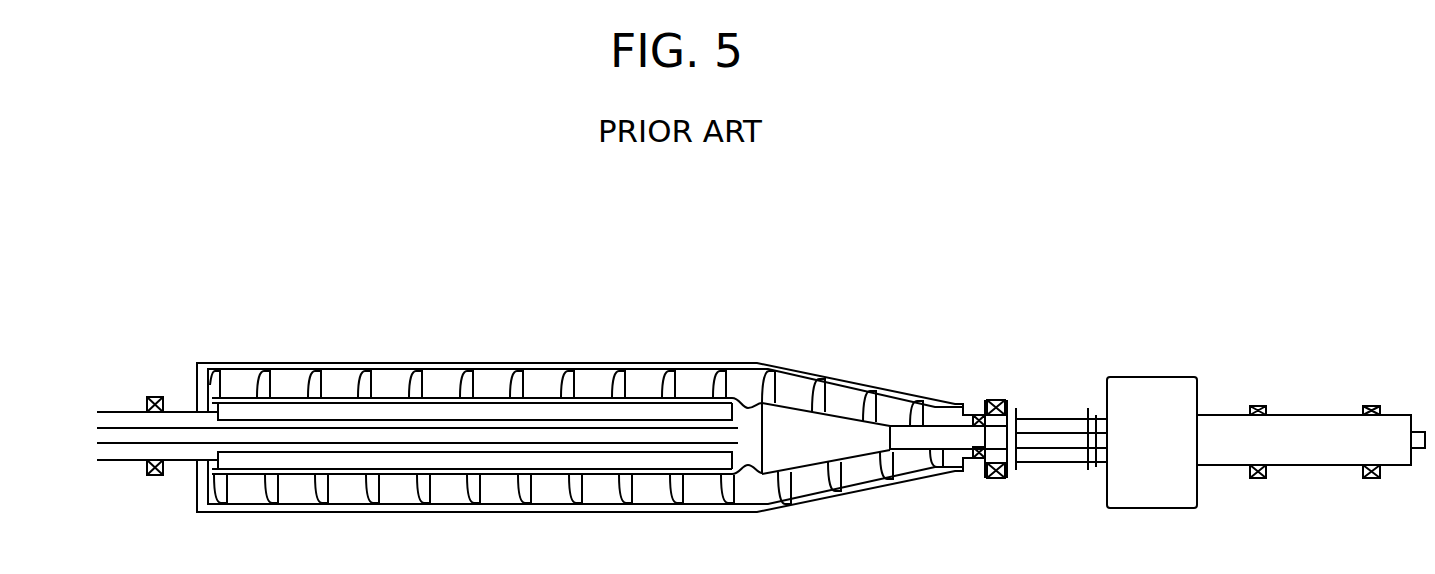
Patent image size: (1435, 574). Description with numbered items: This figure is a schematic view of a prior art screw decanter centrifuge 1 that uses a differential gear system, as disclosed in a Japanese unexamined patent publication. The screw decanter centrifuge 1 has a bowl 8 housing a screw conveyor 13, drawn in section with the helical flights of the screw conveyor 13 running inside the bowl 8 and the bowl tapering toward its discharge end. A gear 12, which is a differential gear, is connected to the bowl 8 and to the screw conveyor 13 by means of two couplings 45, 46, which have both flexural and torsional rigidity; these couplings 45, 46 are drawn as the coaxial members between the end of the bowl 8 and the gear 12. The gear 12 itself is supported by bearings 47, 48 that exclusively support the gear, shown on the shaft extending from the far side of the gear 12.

The screw decanter centrifuge 1 is at (685, 356).
The bowl 8 is at (443, 364).
The screw conveyor 13 is at (510, 504).
The gear 12 is at (1149, 377).
The coupling 45 is at (1043, 419).
The coupling 46 is at (1042, 448).
The bearing 47 is at (1253, 407).
The bearing 48 is at (1365, 407).